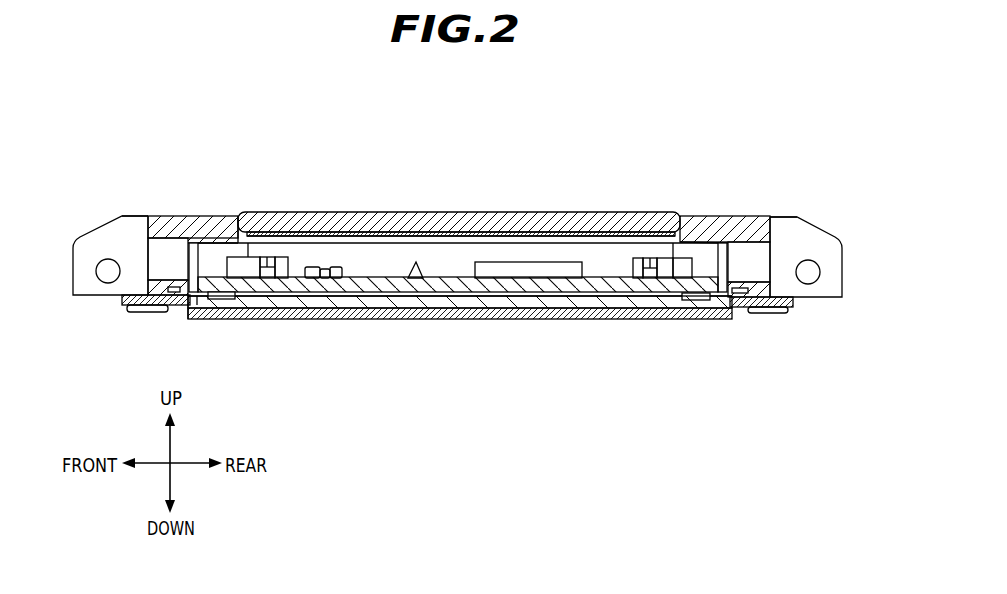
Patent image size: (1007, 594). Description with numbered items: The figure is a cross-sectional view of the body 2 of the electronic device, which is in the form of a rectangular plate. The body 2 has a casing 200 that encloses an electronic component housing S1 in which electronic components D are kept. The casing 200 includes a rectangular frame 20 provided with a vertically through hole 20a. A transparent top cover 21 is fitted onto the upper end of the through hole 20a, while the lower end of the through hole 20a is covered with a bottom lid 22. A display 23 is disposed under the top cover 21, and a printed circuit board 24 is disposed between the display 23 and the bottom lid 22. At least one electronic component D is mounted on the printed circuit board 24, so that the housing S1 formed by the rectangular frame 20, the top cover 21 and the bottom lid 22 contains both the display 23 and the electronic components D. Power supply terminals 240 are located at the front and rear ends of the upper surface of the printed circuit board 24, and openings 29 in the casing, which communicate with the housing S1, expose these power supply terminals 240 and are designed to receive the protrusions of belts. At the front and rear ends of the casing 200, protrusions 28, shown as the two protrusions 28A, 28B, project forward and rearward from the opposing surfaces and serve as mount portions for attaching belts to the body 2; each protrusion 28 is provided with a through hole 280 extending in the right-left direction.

The body of the electronic device 2 is at (476, 156).
The casing 200 is at (428, 171).
The rectangular frame 20 is at (208, 220).
The through hole 20a is at (722, 267).
The top cover 21 is at (585, 212).
The bottom lid 22 is at (188, 307).
The display 23 is at (633, 247).
The printed circuit board 24 is at (417, 263).
The protrusions 28 is at (457, 257).
The protrusion 28A is at (102, 257).
The protrusion 28B is at (807, 284).
The openings 29 is at (177, 246).
The power supply terminals 240 is at (255, 257).
The through hole 280 is at (108, 283).
The electronic component D is at (332, 268).
The electronic component housing S1 is at (464, 305).